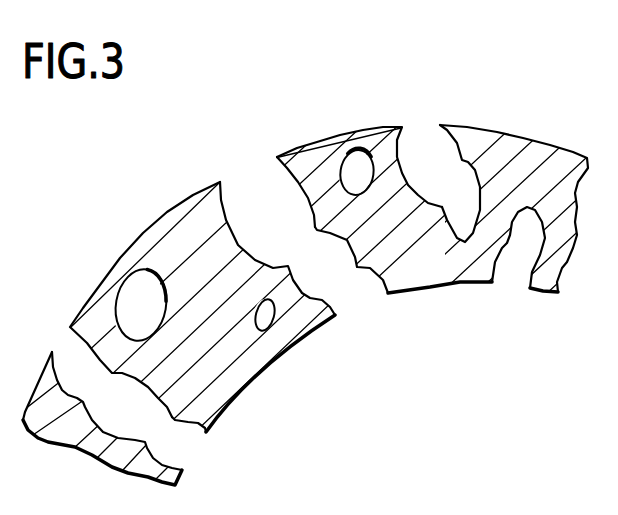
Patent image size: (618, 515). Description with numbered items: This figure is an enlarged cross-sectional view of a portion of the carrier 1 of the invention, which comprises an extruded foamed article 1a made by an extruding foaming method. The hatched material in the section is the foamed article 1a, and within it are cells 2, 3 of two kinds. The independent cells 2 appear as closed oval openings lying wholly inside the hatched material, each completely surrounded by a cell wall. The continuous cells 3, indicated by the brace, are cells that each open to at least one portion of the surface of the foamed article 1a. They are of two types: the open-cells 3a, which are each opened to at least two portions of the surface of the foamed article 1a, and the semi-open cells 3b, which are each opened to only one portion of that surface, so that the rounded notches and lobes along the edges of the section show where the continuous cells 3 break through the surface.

The carrier 1 is at (162, 206).
The extruded foamed article 1a is at (515, 150).
The independent cells 2 is at (140, 290).
The continuous cells 3 is at (387, 75).
The open-cells 3a is at (270, 190).
The semi-open cells 3b is at (418, 153).